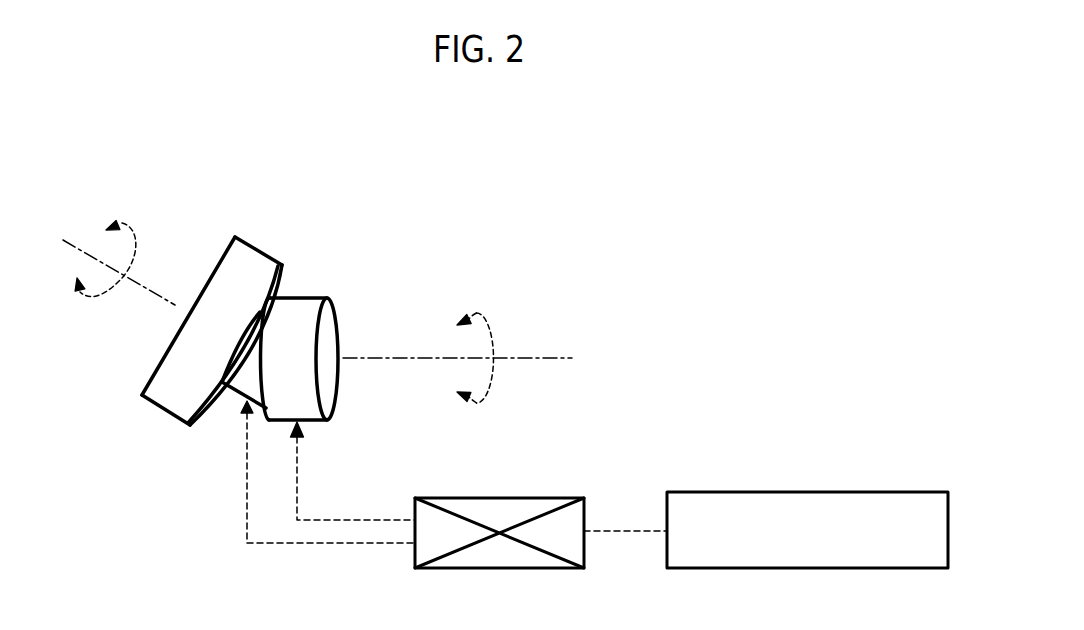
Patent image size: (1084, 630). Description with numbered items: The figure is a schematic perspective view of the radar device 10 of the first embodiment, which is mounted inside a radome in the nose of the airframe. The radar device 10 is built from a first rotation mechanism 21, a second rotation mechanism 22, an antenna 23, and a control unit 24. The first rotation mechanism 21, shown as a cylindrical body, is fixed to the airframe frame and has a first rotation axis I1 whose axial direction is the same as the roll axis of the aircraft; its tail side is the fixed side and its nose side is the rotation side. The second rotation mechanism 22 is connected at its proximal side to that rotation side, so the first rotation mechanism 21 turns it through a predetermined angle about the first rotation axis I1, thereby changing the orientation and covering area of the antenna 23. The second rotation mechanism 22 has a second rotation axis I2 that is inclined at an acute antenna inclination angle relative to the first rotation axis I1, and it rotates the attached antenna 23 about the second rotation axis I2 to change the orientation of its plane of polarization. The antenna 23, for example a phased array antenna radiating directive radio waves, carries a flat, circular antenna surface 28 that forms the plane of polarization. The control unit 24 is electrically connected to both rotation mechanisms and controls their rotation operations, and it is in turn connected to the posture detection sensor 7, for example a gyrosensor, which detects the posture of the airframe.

The radar device 10 is at (457, 197).
The first rotation mechanism 21 is at (301, 292).
The second rotation mechanism 22 is at (240, 397).
The antenna 23 is at (162, 412).
The antenna surface 28 is at (143, 369).
The control unit 24 is at (506, 498).
The posture detection sensor 7 is at (878, 491).
The first rotation axis I1 is at (530, 357).
The second rotation axis I2 is at (73, 243).